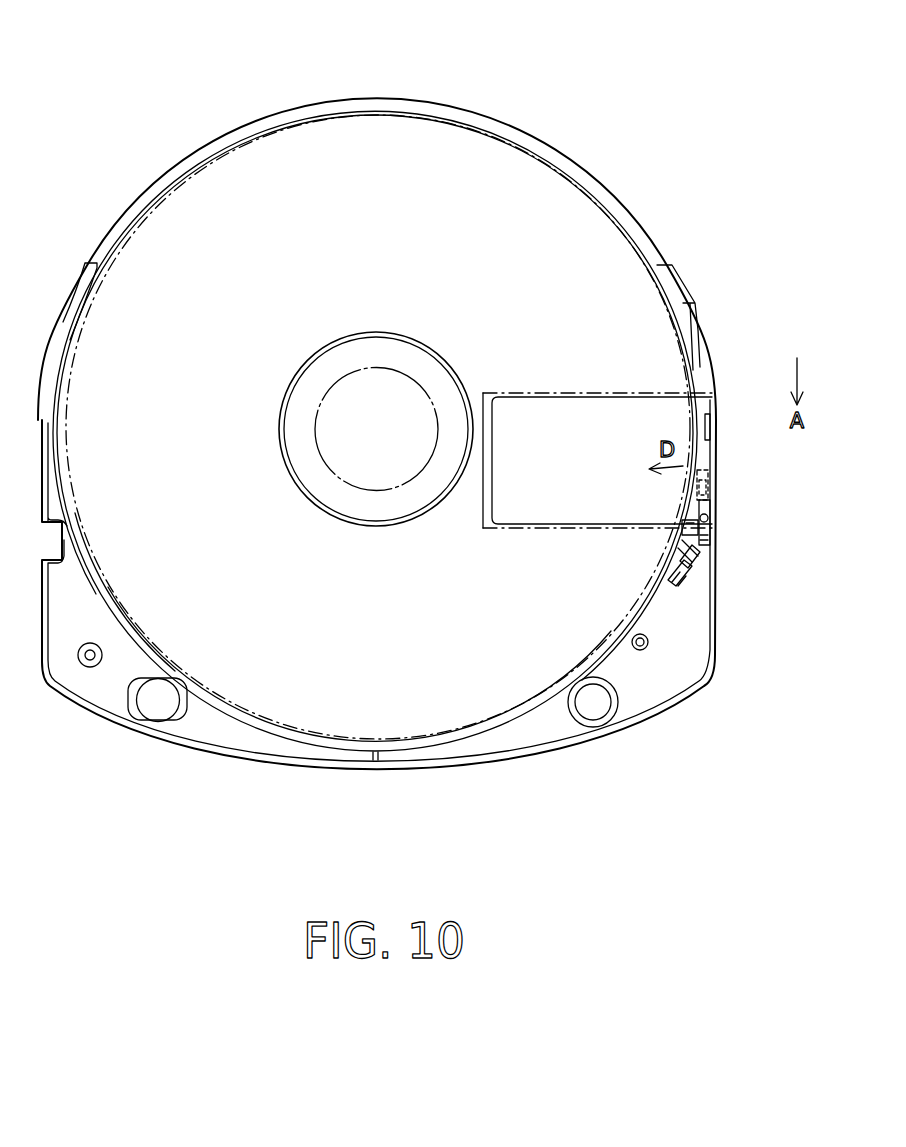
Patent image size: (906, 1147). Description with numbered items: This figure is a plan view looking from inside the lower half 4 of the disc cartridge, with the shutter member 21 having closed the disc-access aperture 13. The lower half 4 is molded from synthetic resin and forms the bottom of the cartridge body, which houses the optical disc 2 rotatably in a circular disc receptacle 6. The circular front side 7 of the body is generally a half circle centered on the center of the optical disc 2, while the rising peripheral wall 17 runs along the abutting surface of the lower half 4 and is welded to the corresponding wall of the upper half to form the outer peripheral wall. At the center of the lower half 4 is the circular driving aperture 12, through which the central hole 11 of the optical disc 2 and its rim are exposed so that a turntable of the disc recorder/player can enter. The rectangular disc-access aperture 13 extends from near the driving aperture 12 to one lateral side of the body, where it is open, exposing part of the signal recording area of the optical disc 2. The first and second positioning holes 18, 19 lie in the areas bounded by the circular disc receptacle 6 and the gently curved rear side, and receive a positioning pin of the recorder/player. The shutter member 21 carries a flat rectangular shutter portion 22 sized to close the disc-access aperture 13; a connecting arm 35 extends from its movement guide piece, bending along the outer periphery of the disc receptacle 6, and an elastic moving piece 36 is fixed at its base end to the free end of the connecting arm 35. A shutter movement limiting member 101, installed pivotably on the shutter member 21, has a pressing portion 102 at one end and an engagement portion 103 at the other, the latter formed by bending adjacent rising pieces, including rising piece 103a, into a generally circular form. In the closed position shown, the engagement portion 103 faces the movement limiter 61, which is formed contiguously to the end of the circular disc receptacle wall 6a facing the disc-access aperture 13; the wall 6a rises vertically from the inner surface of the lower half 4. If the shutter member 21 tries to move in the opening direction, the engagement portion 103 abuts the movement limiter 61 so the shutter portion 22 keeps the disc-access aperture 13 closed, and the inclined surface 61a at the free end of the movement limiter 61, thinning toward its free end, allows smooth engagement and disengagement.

The optical disc 2 is at (352, 712).
The lower half 4 is at (593, 178).
The disc receptacle 6 is at (460, 722).
The circular disc receptacle wall 6a is at (528, 712).
The circular front side 7 is at (380, 98).
The central hole 11 is at (353, 472).
The driving aperture 12 is at (420, 353).
The disc-access aperture 13 is at (557, 401).
The rising peripheral wall 17 is at (262, 763).
The first positioning hole 18 is at (603, 708).
The second positioning hole 19 is at (143, 703).
The shutter member 21 is at (708, 410).
The shutter portion 22 is at (536, 505).
The connecting arm 35 is at (710, 554).
The elastic moving piece 36 is at (712, 540).
The movement limiter 61 is at (672, 548).
The inclined surface 61a is at (686, 575).
The shutter movement limiting member 101 is at (708, 500).
The pressing portion 102 is at (702, 492).
The engagement portion 103 is at (684, 520).
The rising piece 103a is at (700, 562).